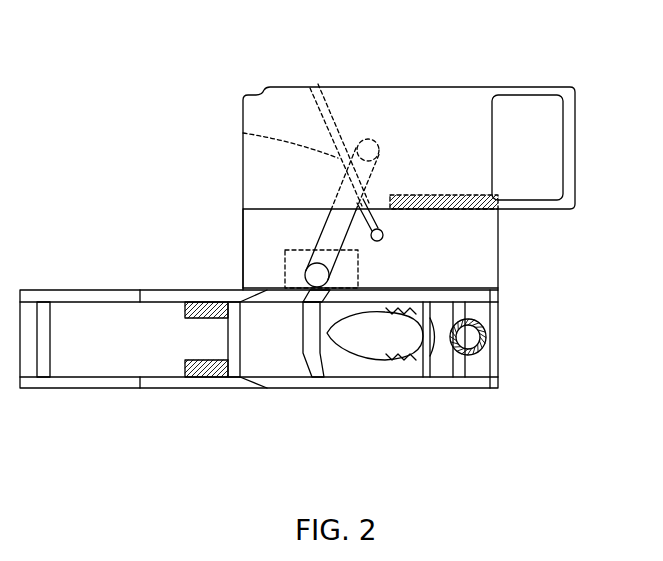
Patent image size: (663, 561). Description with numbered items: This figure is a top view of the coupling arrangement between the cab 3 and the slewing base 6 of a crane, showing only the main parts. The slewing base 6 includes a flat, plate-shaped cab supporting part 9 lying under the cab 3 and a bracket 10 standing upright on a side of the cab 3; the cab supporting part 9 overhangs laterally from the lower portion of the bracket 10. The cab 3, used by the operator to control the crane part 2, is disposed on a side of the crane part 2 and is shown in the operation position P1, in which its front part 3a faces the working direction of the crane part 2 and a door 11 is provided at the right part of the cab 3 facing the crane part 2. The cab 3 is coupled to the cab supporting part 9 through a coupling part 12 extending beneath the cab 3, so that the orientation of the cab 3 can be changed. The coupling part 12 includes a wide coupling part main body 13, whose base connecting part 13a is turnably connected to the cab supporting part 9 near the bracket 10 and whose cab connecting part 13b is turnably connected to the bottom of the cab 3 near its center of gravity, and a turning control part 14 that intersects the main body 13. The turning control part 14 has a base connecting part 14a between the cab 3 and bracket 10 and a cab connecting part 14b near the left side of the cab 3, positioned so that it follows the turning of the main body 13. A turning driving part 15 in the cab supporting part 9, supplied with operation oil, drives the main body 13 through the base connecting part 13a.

The crane part 2 is at (260, 418).
The cab 3 is at (445, 87).
The front part 3a is at (541, 106).
The operation position P1 is at (596, 80).
The slewing base 6 is at (524, 294).
The cab supporting part 9 is at (498, 264).
The bracket 10 is at (175, 390).
The door 11 is at (507, 206).
The coupling part 12 is at (290, 227).
The coupling part main body 13 is at (318, 228).
The base connecting part 13a is at (305, 280).
The cab connecting part 13b is at (372, 139).
The turning control part 14 is at (243, 133).
The base connecting part 14a is at (383, 235).
The cab connecting part 14b is at (310, 88).
The turning driving part 15 is at (285, 258).